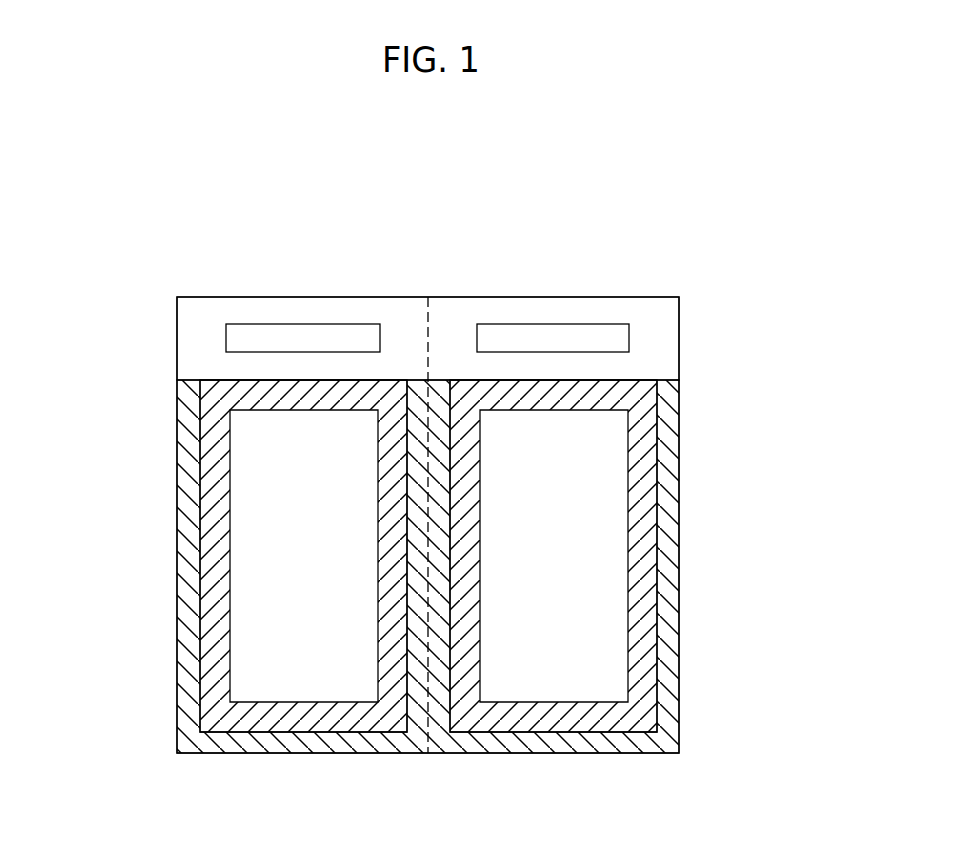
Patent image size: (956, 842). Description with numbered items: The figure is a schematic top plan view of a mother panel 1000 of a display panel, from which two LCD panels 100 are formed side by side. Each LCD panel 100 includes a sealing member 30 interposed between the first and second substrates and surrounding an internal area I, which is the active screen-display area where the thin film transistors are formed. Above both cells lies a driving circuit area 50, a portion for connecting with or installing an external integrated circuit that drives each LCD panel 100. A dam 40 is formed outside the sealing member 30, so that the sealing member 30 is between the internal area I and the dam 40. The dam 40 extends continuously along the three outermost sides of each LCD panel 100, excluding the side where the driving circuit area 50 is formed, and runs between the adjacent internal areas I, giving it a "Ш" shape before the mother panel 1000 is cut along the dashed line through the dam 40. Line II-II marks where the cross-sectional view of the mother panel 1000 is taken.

The mother panel 1000 is at (405, 166).
The LCD panel 100 is at (177, 763).
The sealing member 30 is at (391, 397).
The dam 40 is at (670, 502).
The driving circuit area 50 is at (665, 339).
The internal area I is at (283, 552).
The line II- II is at (502, 637).